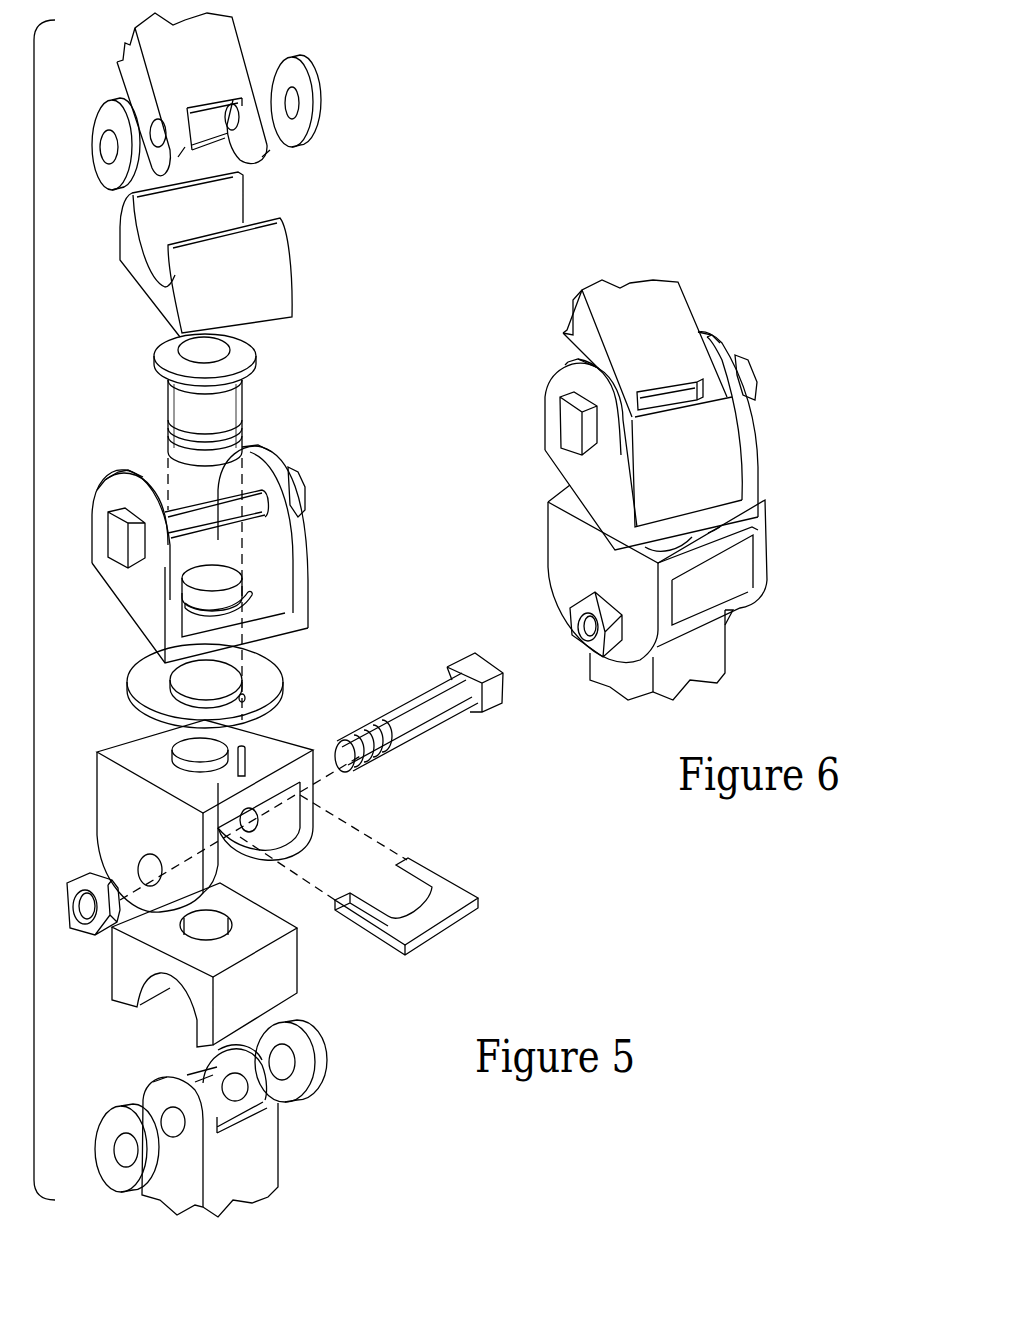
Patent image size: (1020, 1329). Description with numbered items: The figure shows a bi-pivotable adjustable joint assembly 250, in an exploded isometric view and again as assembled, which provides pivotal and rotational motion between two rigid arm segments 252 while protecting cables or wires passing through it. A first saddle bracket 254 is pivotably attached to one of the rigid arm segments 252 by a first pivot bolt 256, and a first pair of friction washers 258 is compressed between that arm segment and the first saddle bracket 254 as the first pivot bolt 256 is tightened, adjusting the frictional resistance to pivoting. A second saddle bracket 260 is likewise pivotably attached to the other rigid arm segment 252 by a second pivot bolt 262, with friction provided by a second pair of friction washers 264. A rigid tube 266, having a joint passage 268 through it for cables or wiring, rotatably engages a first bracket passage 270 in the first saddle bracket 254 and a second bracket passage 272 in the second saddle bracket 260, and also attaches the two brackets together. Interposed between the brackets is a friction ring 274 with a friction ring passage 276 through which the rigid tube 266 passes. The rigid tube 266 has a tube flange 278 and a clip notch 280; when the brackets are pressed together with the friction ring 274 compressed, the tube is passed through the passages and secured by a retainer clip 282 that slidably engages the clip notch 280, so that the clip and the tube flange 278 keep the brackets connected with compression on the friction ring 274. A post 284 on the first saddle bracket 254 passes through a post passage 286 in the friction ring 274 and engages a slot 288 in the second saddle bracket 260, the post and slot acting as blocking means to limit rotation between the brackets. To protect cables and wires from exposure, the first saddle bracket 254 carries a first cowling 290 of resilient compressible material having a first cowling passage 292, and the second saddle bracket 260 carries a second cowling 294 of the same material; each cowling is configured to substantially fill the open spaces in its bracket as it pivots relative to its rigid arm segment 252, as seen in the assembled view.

In FIG. 5, the adjustable joint assembly 250 is at (360, 130).
In FIG. 6, the adjustable joint assembly 250 is at (785, 350).
In FIG. 5, the rigid arm segments 252 is at (240, 60).
In FIG. 6, the rigid arm segments 252 is at (685, 318).
In FIG. 5, the first saddle bracket 254 is at (239, 805).
In FIG. 6, the first saddle bracket 254 is at (768, 572).
In FIG. 5, the first pivot bolt 256 is at (415, 733).
In FIG. 5, the first pair of friction washers 258 is at (298, 1090).
In FIG. 5, the second saddle bracket 260 is at (241, 554).
In FIG. 6, the second saddle bracket 260 is at (755, 484).
In FIG. 5, the second pivot bolt 262 is at (298, 497).
In FIG. 5, the second pair of friction washers 264 is at (297, 140).
In FIG. 5, the rigid tube 266 is at (203, 388).
In FIG. 5, the joint passage 268 is at (195, 355).
In FIG. 5, the first bracket passage 270 is at (190, 750).
In FIG. 5, the second bracket passage 272 is at (200, 580).
In FIG. 5, the friction ring 274 is at (221, 674).
In FIG. 6, the friction ring 274 is at (715, 535).
In FIG. 5, the friction ring passage 276 is at (190, 683).
In FIG. 5, the tube flange 278 is at (252, 352).
In FIG. 5, the clip notch 280 is at (170, 430).
In FIG. 5, the retainer clip 282 is at (440, 885).
In FIG. 5, the post 284 is at (255, 745).
In FIG. 5, the post passage 286 is at (245, 699).
In FIG. 5, the slot 288 is at (255, 596).
In FIG. 5, the first cowling 290 is at (288, 1000).
In FIG. 6, the first cowling 290 is at (740, 598).
In FIG. 5, the first cowling passage 292 is at (197, 928).
In FIG. 5, the second cowling 294 is at (278, 247).
In FIG. 6, the second cowling 294 is at (728, 448).